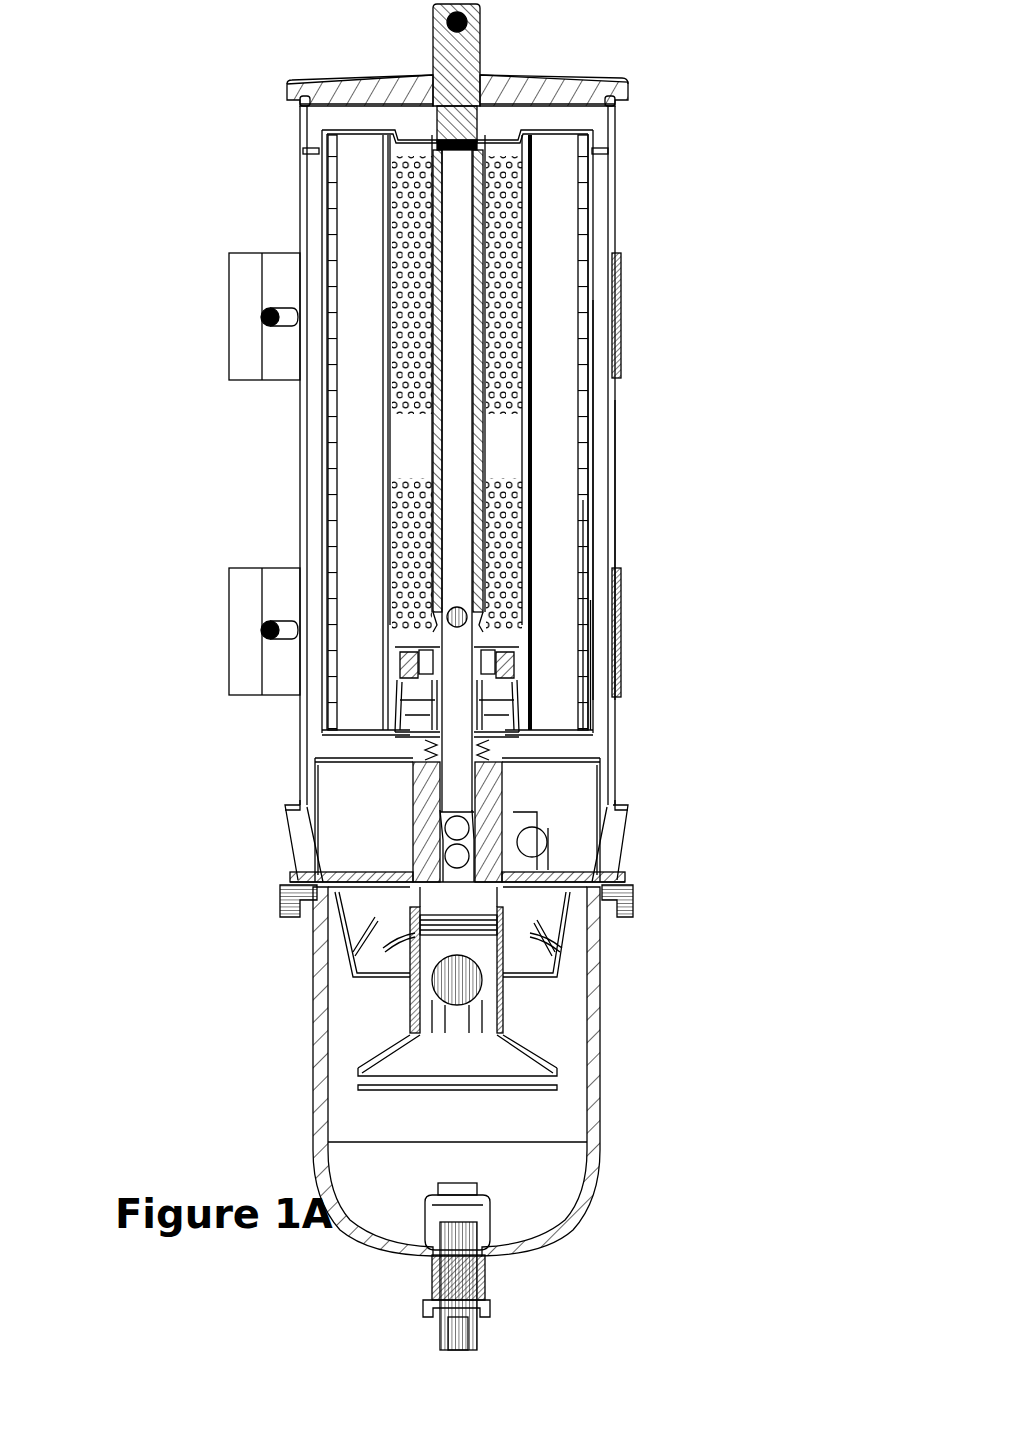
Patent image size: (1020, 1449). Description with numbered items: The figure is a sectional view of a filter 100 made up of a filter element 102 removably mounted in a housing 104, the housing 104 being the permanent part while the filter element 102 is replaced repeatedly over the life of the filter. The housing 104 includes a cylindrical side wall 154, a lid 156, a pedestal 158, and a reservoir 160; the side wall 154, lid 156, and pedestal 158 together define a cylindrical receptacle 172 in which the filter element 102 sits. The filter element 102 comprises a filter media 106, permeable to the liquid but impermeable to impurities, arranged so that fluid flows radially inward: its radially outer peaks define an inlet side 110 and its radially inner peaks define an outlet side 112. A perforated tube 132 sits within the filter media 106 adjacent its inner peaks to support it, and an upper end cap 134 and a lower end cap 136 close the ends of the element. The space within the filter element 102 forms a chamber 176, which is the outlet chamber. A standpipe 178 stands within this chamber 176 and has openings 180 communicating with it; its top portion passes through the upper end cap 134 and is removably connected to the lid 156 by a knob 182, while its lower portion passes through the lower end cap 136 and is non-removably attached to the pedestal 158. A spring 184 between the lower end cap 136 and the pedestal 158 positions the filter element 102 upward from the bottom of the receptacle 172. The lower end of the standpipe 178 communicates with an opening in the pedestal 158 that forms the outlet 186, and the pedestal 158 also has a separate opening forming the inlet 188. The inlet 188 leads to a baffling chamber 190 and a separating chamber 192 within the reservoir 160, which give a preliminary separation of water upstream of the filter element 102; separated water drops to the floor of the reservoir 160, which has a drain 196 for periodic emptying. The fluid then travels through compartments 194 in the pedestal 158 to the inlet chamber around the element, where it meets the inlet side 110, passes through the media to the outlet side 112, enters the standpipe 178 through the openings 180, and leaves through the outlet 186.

The filter 100 is at (686, 383).
The filter element 102 is at (612, 505).
The housing 104 is at (637, 548).
The filter media 106 is at (551, 590).
The inlet side 110 is at (591, 653).
The outlet side 112 is at (598, 683).
The perforated tube 132 is at (522, 230).
The upper end cap 134 is at (577, 127).
The lower end cap 136 is at (566, 740).
The cylindrical side wall 154 is at (618, 449).
The lid 156 is at (364, 78).
The pedestal 158 is at (620, 848).
The reservoir 160 is at (598, 1040).
The cylindrical receptacle 172 is at (597, 258).
The chamber 176 is at (412, 437).
The standpipe 178 is at (489, 287).
The openings 180 is at (436, 638).
The knob 182 is at (470, 52).
The spring 184 is at (420, 742).
The outlet 186 is at (462, 827).
The inlet 188 is at (459, 857).
The baffling chamber 190 is at (498, 1000).
The separating chamber 192 is at (545, 963).
The compartments 194 is at (348, 838).
The drain 196 is at (490, 1292).